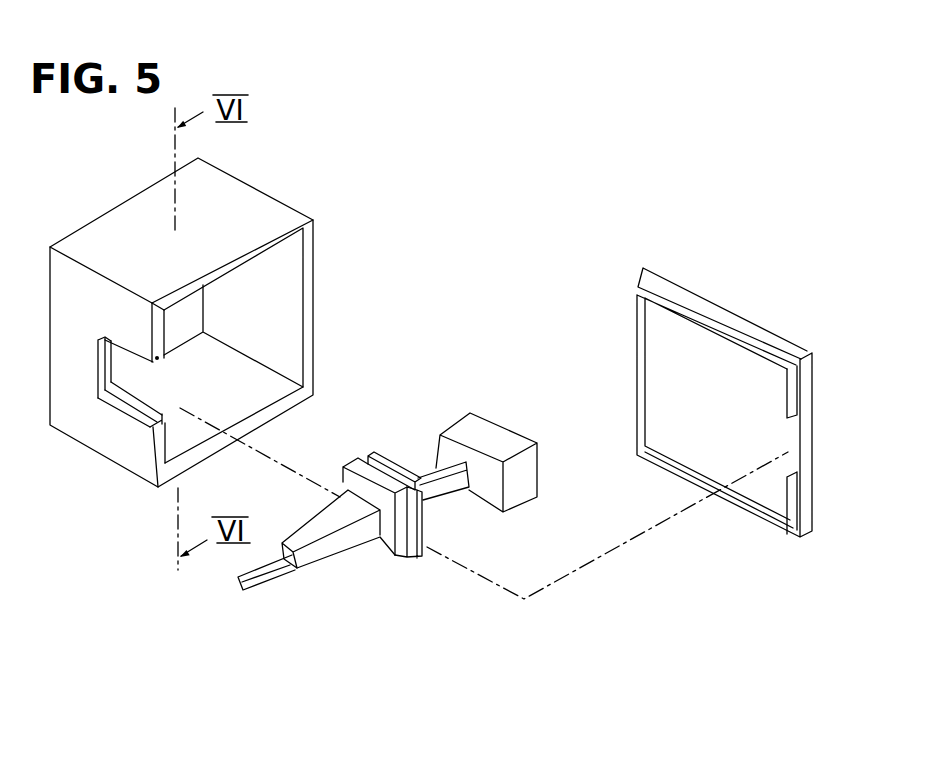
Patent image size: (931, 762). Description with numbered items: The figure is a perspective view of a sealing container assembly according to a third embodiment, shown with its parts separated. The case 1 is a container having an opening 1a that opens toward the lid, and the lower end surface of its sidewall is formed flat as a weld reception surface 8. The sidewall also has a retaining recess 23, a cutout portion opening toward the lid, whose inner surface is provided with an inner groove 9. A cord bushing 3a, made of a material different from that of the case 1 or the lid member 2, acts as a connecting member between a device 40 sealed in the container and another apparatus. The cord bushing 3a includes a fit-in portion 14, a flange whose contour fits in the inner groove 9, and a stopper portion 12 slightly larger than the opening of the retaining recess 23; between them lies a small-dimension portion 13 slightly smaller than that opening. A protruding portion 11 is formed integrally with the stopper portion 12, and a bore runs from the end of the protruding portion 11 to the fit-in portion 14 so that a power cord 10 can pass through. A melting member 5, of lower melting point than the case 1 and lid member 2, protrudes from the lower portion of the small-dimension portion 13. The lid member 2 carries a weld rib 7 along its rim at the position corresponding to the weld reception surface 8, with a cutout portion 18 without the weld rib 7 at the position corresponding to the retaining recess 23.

The case 1 is at (112, 205).
The opening 1a is at (270, 388).
The lid member 2 is at (780, 335).
The melting member 5 is at (422, 556).
The weld rib 7 is at (682, 305).
The weld reception surface 8 is at (303, 285).
The inner groove 9 is at (150, 405).
The power cord 10 is at (267, 583).
The protruding portion 11 is at (318, 558).
The stopper portion 12 is at (383, 540).
The small-dimension portion 13 is at (406, 490).
The fit-in portion 14 is at (378, 452).
The cutout portion 18 is at (797, 438).
The retaining recess 23 is at (140, 377).
The cord bushing 3a is at (355, 548).
The device 40 is at (520, 477).